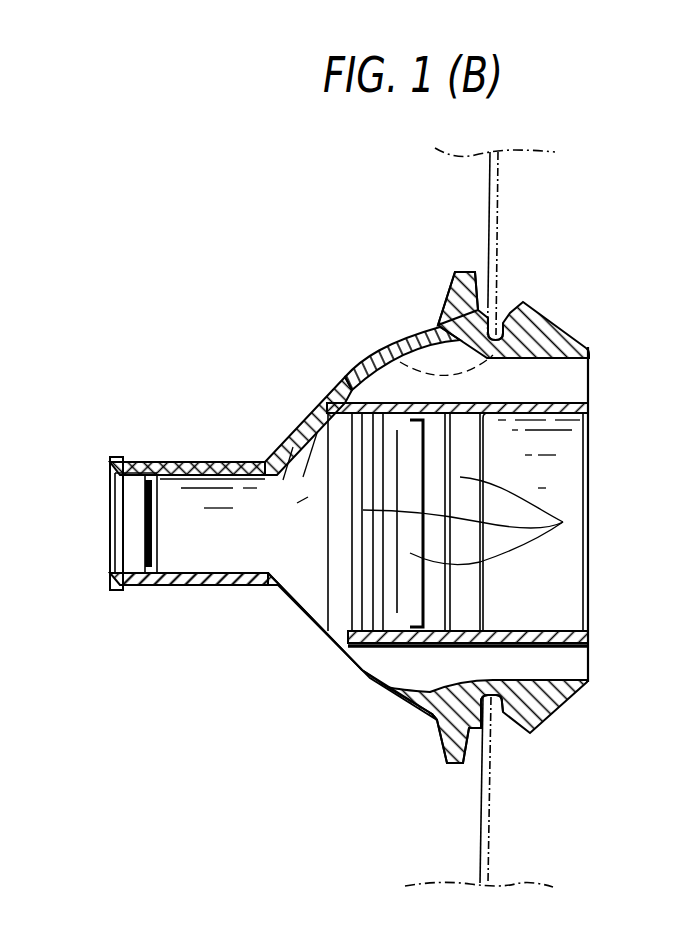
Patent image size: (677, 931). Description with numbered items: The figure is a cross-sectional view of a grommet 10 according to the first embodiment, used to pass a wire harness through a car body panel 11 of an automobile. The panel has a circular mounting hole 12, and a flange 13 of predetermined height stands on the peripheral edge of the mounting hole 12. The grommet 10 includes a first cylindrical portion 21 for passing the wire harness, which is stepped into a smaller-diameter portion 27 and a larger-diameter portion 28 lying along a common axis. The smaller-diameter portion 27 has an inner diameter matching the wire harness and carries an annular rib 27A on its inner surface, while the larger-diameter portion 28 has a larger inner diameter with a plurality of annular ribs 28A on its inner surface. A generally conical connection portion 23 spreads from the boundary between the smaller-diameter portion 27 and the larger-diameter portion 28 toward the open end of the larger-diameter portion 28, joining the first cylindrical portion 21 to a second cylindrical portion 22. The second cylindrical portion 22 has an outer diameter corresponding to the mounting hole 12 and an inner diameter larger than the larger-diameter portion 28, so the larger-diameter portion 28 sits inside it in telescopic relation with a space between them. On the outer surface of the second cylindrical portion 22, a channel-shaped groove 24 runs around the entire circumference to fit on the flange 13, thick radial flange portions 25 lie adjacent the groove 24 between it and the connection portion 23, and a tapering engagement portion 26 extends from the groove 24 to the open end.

The grommet 10 is at (296, 348).
The car body panel 11 is at (500, 187).
The mounting hole 12 is at (425, 368).
The flange 13 is at (508, 300).
The first cylindrical portion 21 is at (177, 587).
The second cylindrical portion 22 is at (397, 703).
The connection portion 23 is at (340, 670).
The groove 24 is at (505, 735).
The flange portions 25 is at (462, 273).
The tapering engagement portion 26 is at (552, 322).
The smaller-diameter portion 27 is at (203, 462).
The annular rib 27A is at (147, 515).
The larger-diameter portion 28 is at (557, 398).
The annular ribs 28A is at (563, 522).